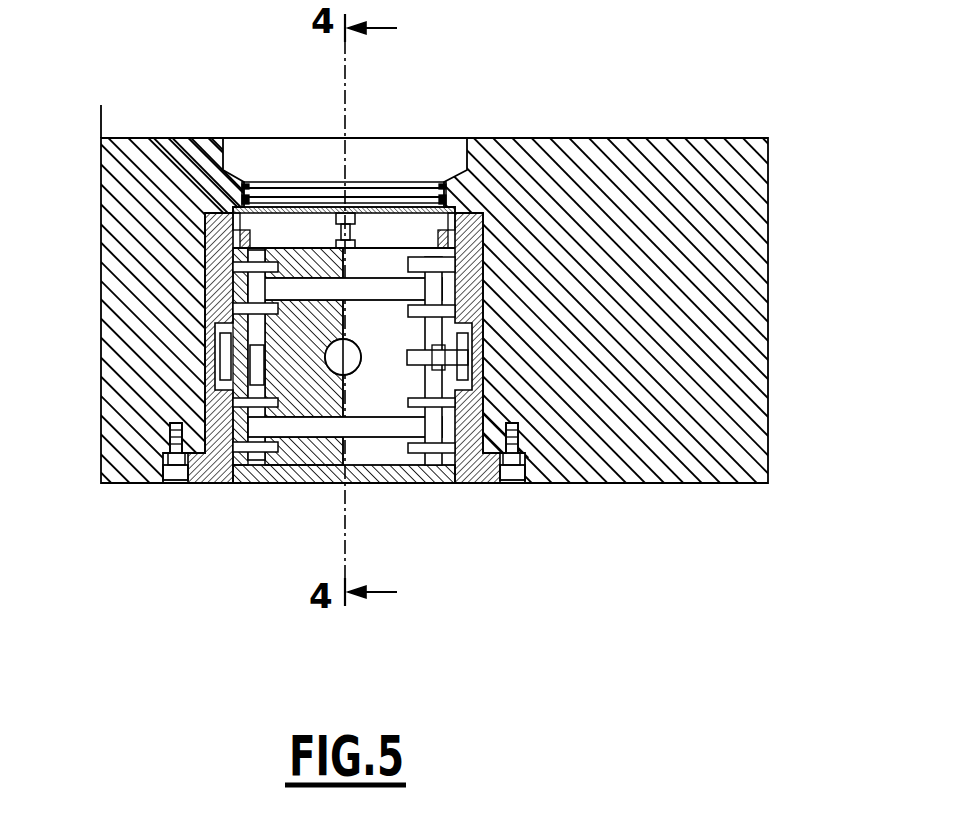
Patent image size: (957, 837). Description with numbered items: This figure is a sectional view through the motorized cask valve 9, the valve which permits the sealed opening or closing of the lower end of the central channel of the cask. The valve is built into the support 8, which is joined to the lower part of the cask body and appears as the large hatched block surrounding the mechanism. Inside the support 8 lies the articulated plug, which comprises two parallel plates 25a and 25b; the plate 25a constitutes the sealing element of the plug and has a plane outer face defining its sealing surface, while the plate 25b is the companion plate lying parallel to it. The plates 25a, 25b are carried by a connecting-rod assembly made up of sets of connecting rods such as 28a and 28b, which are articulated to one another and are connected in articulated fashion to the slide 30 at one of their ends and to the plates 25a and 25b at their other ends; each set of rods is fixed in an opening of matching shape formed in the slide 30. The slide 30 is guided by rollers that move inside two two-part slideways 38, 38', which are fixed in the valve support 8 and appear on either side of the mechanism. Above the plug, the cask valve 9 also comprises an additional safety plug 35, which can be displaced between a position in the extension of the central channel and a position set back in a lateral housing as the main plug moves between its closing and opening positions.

The support 8 is at (695, 162).
The motorized cask valve 9 is at (715, 488).
The plate 25a is at (325, 470).
The plate 25b is at (303, 262).
The connecting rod 28a is at (258, 470).
The connecting rod 28b is at (247, 291).
The slide 30 is at (316, 420).
The safety plug 35 is at (393, 207).
The two-part slideway 38 is at (206, 382).
The two-part slideway 38' is at (481, 374).